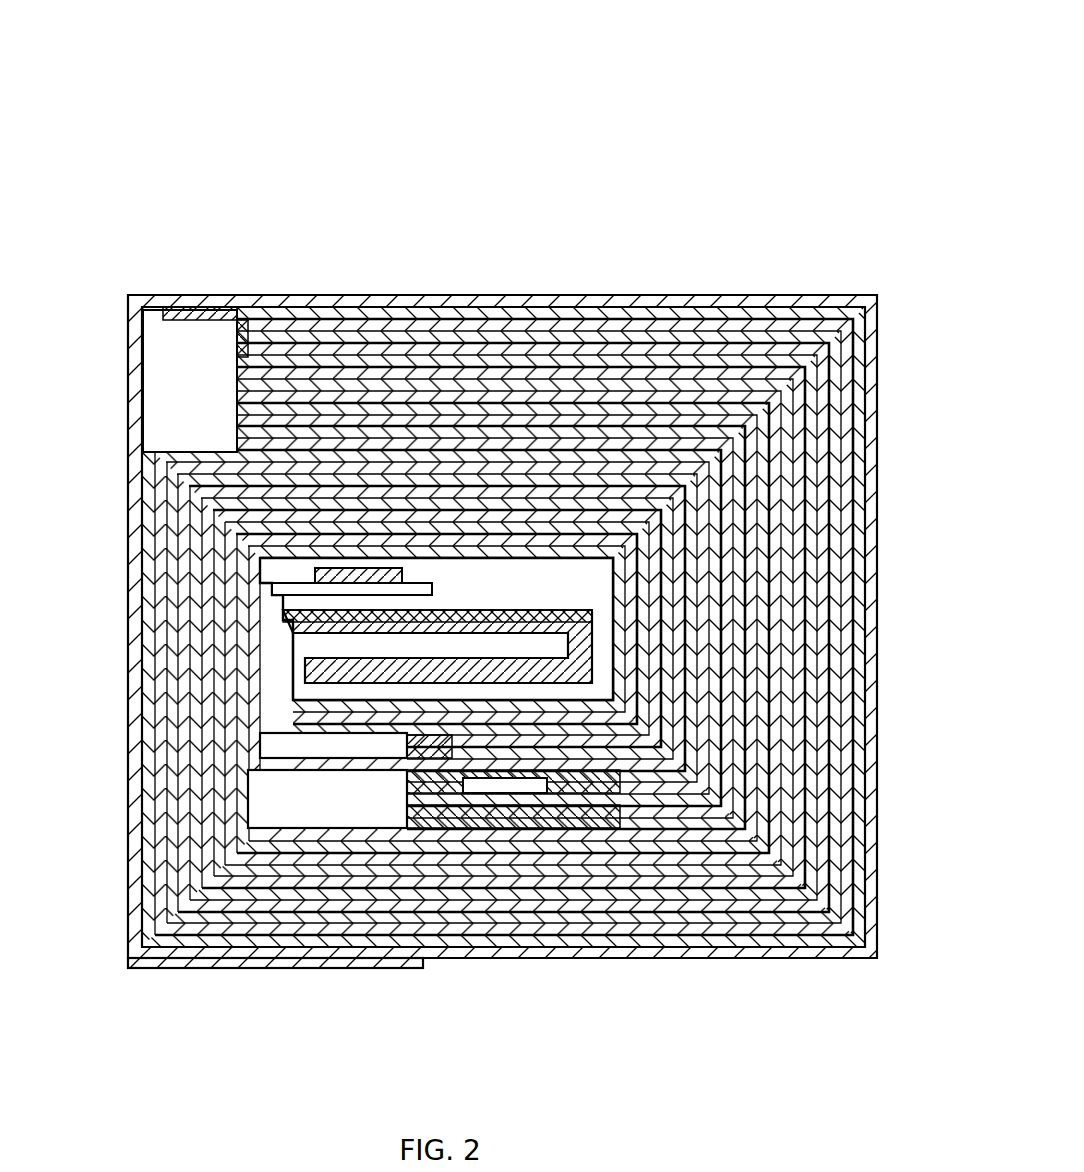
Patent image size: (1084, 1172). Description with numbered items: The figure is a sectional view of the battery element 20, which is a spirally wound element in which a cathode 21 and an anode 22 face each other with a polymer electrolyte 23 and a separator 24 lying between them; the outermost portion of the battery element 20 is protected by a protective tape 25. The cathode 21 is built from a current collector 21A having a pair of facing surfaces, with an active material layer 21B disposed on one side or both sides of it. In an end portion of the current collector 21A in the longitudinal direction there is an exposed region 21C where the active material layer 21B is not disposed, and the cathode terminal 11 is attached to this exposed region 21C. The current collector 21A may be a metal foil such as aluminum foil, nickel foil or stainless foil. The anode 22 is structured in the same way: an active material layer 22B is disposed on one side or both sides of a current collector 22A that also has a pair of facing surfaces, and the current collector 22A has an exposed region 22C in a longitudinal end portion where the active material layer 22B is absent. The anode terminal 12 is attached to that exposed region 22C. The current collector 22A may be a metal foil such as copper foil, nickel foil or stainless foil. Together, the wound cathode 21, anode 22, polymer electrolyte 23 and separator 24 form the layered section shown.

The battery element 20 is at (702, 103).
The cathode 21 is at (370, 178).
The current collector 21A is at (298, 398).
The active material layer 21B is at (355, 400).
The exposed region 21C is at (268, 404).
The anode 22 is at (580, 178).
The current collector 22A is at (522, 323).
The active material layer 22B is at (556, 440).
The exposed region 22C is at (245, 322).
The polymer electrolyte 23 is at (625, 430).
The separator 24 is at (686, 405).
The protective tape 25 is at (800, 298).
The cathode terminal 11 is at (323, 745).
The anode terminal 12 is at (530, 793).